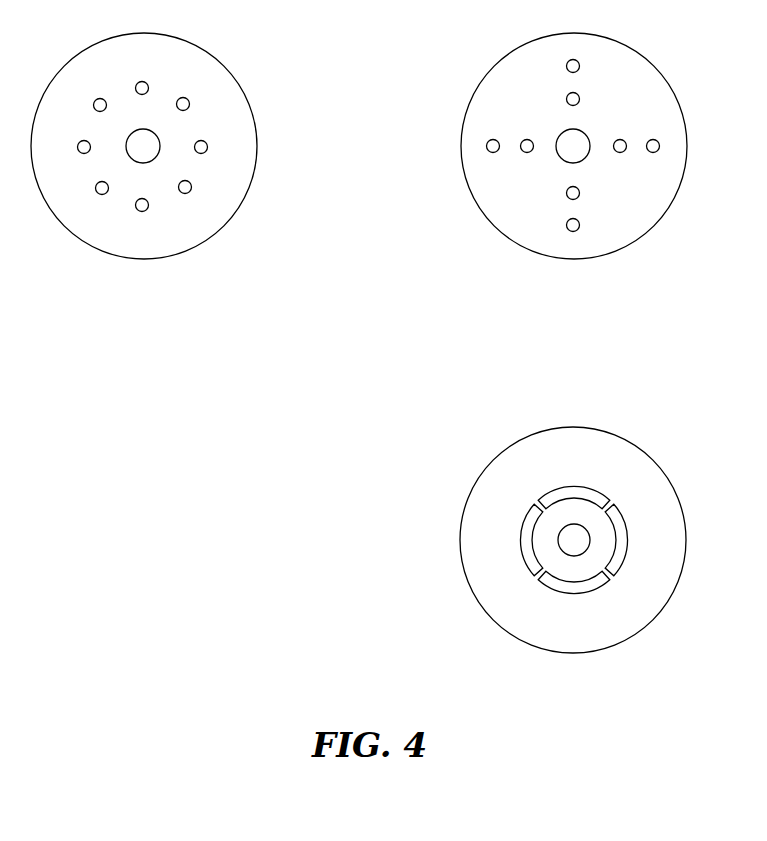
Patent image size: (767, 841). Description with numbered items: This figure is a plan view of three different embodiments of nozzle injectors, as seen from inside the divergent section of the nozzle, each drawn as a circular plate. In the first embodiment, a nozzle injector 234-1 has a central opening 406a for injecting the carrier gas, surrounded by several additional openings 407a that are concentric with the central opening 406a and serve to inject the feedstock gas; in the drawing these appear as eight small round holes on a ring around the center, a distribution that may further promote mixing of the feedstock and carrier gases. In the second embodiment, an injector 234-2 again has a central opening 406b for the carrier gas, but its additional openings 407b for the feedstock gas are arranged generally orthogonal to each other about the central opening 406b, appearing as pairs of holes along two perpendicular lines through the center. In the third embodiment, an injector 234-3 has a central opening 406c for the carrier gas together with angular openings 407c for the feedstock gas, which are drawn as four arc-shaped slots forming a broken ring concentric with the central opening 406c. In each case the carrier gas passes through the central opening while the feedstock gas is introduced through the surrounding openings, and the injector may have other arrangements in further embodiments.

The nozzle injector 234-1 is at (219, 60).
The injector 234-2 is at (649, 60).
The injector 234-3 is at (650, 454).
The central opening 406a is at (143, 163).
The central opening 406b is at (557, 150).
The central opening 406c is at (558, 539).
The additional openings 407a is at (140, 211).
The additional openings 407b is at (488, 146).
The angular openings 407c is at (529, 520).